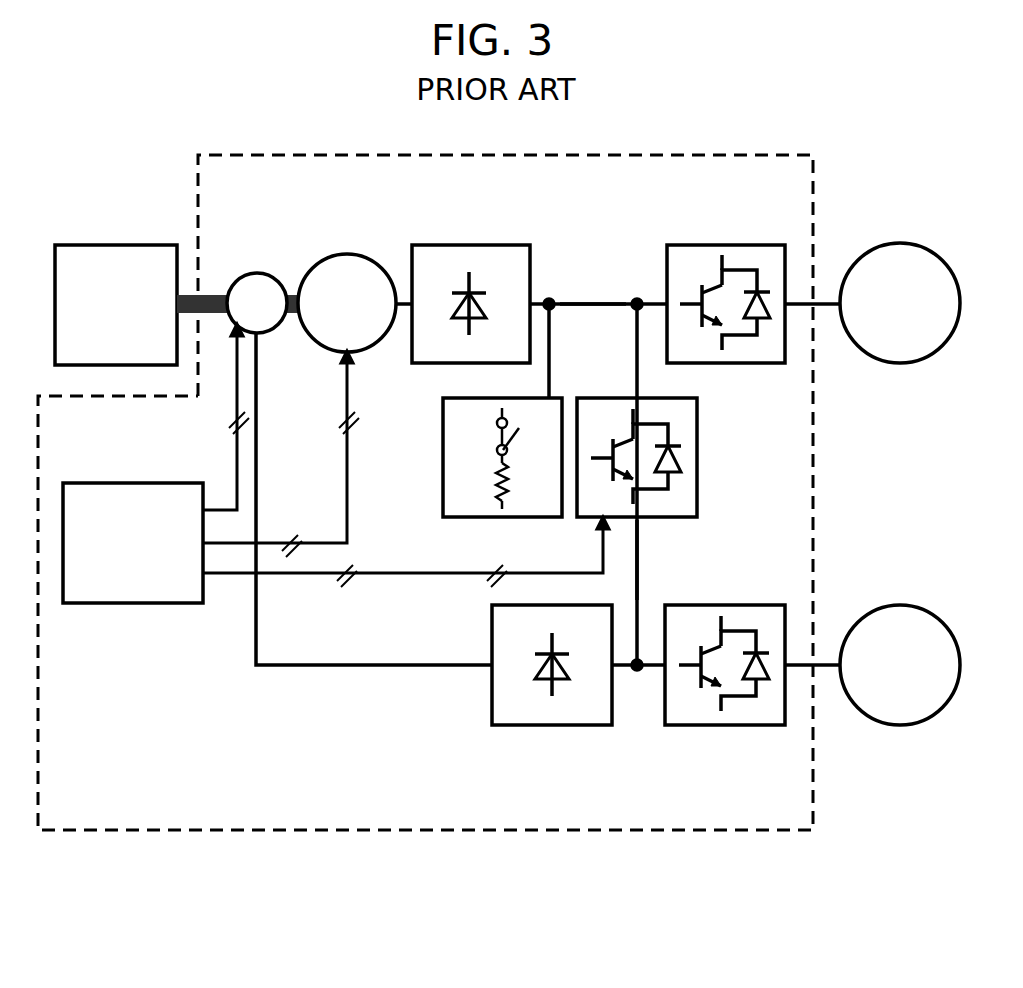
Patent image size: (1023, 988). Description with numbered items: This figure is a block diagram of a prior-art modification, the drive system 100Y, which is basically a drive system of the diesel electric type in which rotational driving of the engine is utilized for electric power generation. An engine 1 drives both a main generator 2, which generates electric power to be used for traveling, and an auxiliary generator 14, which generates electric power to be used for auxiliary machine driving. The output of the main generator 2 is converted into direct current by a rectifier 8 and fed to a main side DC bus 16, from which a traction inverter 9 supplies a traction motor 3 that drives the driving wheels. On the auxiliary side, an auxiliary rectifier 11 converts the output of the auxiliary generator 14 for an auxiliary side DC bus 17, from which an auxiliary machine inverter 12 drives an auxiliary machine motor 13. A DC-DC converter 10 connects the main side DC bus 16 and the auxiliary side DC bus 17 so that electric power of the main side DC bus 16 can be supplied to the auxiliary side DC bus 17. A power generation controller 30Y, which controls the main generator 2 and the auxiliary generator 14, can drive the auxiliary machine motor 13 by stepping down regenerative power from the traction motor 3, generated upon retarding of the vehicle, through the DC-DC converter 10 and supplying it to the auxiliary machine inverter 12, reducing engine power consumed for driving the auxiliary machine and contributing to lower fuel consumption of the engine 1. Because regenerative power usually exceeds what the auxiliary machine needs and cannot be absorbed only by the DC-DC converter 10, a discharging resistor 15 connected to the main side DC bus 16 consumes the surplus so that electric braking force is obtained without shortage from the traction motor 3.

The engine 1 is at (120, 243).
The main generator 2 is at (345, 254).
The traction motor 3 is at (920, 245).
The rectifier 8 is at (478, 244).
The traction inverter 9 is at (712, 244).
The DC-DC converter 10 is at (697, 457).
The auxiliary rectifier 11 is at (540, 726).
The auxiliary machine inverter 12 is at (735, 726).
The auxiliary machine motor 13 is at (945, 705).
The auxiliary generator 14 is at (257, 273).
The discharging resistor 15 is at (443, 456).
The main side DC bus 16 is at (595, 302).
The auxiliary side DC bus 17 is at (640, 558).
The power generation controller 30Y is at (137, 481).
The drive system 100Y is at (627, 152).